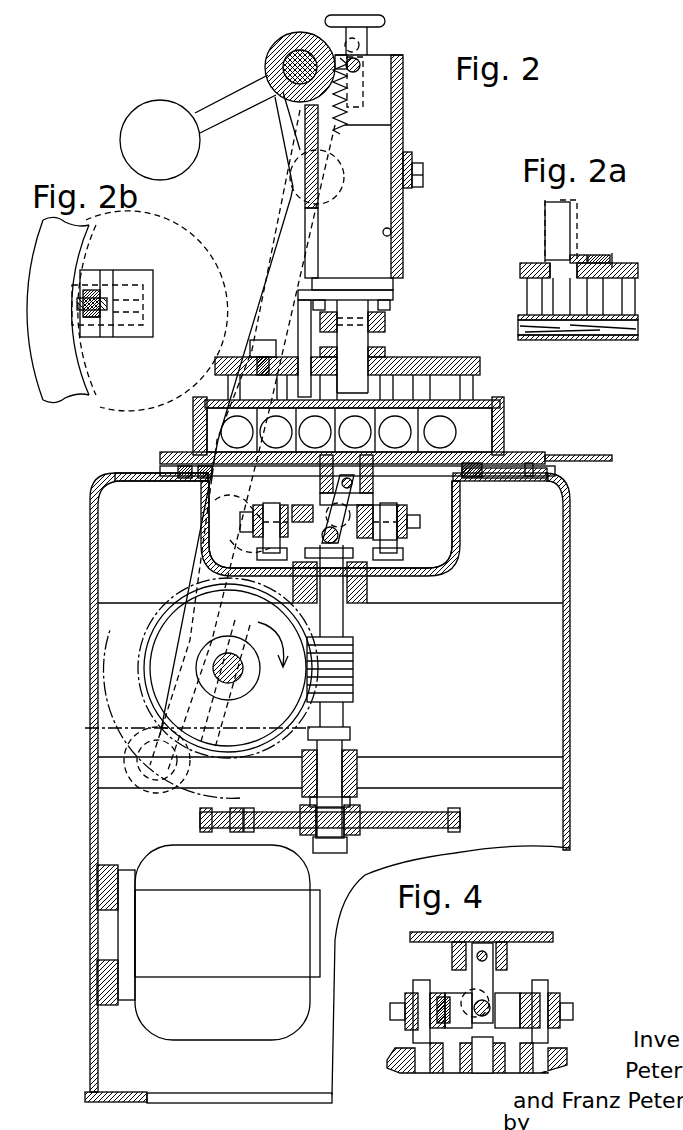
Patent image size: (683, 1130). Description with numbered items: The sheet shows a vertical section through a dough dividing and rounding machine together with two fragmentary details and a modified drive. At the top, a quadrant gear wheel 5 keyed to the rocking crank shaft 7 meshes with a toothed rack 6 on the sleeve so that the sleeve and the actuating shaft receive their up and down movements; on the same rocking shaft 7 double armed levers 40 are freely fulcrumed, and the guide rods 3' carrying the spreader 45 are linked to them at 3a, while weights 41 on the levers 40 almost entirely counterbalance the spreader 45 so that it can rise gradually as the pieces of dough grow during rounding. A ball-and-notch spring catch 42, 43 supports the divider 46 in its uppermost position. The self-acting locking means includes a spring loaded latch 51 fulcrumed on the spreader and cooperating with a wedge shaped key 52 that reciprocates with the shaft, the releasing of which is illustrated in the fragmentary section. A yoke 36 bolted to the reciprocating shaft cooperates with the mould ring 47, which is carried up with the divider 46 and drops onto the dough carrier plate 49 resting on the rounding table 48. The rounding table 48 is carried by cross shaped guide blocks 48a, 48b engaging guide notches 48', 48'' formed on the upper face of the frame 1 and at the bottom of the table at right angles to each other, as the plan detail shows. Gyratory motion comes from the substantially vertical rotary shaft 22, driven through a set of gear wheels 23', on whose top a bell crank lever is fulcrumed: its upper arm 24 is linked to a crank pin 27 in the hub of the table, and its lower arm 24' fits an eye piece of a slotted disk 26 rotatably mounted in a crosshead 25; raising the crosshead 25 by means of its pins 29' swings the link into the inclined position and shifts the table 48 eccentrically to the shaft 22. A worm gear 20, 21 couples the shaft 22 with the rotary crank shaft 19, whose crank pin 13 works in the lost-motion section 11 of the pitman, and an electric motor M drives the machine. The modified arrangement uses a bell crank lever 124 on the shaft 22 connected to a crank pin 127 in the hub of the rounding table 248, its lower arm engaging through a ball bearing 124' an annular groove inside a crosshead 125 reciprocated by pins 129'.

In FIG. 2B, the frame 1 is at (40, 266).
In FIG. 2, the guide rod 3' is at (365, 146).
In FIG. 2, the link point 3a is at (362, 52).
In FIG. 2, the quadrant gear wheel 5 is at (300, 103).
In FIG. 2, the toothed rack 6 is at (392, 120).
In FIG. 2, the rocking crank shaft 7 is at (283, 58).
In FIG. 2, the lost-motion section 11 is at (100, 727).
In FIG. 2, the crank pin 13 is at (165, 765).
In FIG. 2, the rotary crank shaft 19 is at (232, 682).
In FIG. 2, the worm gear 20 is at (278, 708).
In FIG. 2, the worm gear 21 is at (356, 658).
In FIG. 2, the rotary shaft 22 is at (330, 618).
In FIG. 4, the rotary shaft 22 is at (480, 1060).
In FIG. 2, the set of gear wheels 23' is at (330, 833).
In FIG. 2, the upper arm of bell crank lever 24 is at (332, 499).
In FIG. 2, the lower arm of bell crank lever 24' is at (210, 526).
In FIG. 2, the crosshead 25 is at (262, 512).
In FIG. 2, the slotted disk 26 is at (400, 523).
In FIG. 2, the crank pin 27 is at (395, 480).
In FIG. 2, the pins 29' is at (437, 534).
In FIG. 2, the yoke 36 is at (386, 318).
In FIG. 2, the double armed lever 40 is at (212, 122).
In FIG. 2, the weight 41 is at (164, 108).
In FIG. 2, the spring catch 42 is at (408, 188).
In FIG. 2, the spring catch 43 is at (392, 233).
In FIG. 2, the spreader 45 is at (442, 366).
In FIG. 2A, the spreader 45 is at (522, 266).
In FIG. 2, the divider 46 is at (462, 405).
In FIG. 2A, the divider 46 is at (600, 318).
In FIG. 2, the mould ring 47 is at (502, 436).
In FIG. 2, the rounding table 48 is at (382, 470).
In FIG. 2B, the rounding table 48 is at (122, 276).
In FIG. 2B, the guide notch 48' is at (162, 288).
In FIG. 2B, the guide notch 48'' is at (122, 367).
In FIG. 2, the cross shaped guide block 48a is at (198, 484).
In FIG. 2B, the cross shaped guide block 48a is at (100, 312).
In FIG. 2, the cross shaped guide block 48b is at (488, 482).
In FIG. 2, the dough carrier plate 49 is at (606, 456).
In FIG. 2A, the dough carrier plate 49 is at (630, 340).
In FIG. 2, the spring loaded latch 51 is at (390, 349).
In FIG. 2A, the spring loaded latch 51 is at (595, 258).
In FIG. 2, the wedge shaped key 52 is at (300, 322).
In FIG. 2A, the wedge shaped key 52 is at (570, 218).
In FIG. 4, the bell crank lever 124 is at (507, 983).
In FIG. 4, the ball bearing 124' is at (428, 990).
In FIG. 4, the crosshead 125 is at (405, 998).
In FIG. 4, the crank pin 127 is at (510, 947).
In FIG. 4, the pins 129' is at (551, 1016).
In FIG. 4, the rounding table 248 is at (410, 937).
In FIG. 2, the electric motor M is at (215, 1030).